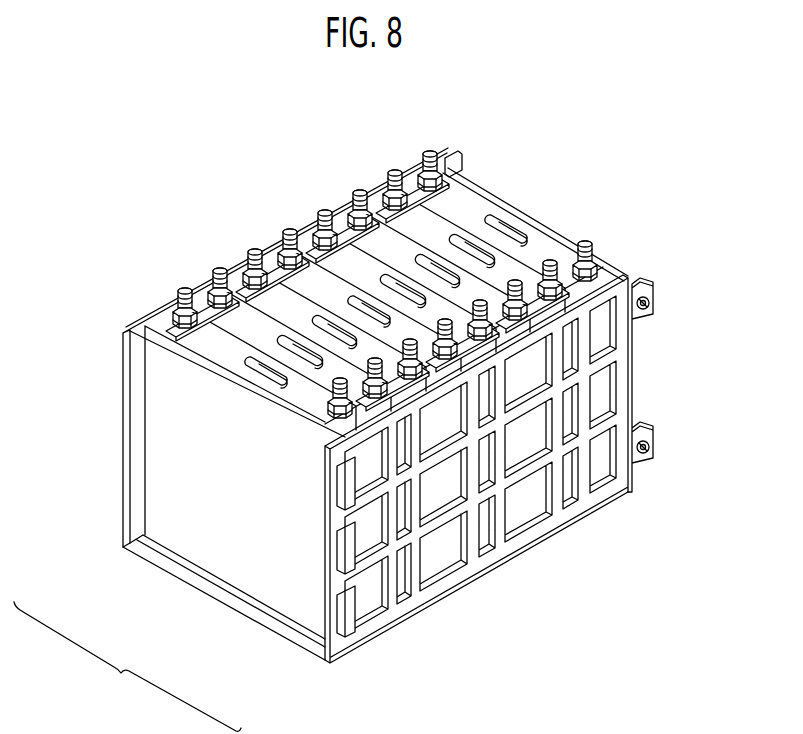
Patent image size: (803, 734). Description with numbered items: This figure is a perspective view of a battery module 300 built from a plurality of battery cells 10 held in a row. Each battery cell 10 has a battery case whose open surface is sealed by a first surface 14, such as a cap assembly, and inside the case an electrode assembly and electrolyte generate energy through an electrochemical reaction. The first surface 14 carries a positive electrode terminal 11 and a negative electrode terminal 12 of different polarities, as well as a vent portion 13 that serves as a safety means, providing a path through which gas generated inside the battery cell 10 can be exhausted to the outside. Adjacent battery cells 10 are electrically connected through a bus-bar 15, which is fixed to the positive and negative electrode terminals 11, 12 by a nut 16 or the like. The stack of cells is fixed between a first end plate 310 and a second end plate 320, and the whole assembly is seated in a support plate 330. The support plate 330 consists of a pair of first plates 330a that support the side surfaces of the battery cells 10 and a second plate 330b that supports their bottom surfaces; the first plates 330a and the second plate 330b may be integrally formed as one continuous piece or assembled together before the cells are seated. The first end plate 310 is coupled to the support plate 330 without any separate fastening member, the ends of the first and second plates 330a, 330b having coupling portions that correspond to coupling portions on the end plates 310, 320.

The battery module 300 is at (353, 413).
The first end plate 310 is at (172, 420).
The second end plate 320 is at (489, 176).
The support plate 330 is at (127, 666).
The first plate 330a is at (118, 488).
The second plate 330b is at (205, 605).
The battery cell 10 is at (538, 502).
The positive electrode terminal 11 is at (427, 152).
The negative electrode terminal 12 is at (583, 243).
The vent portion 13 is at (500, 228).
The first surface 14 is at (552, 247).
The bus-bar 15 is at (208, 306).
The nut 16 is at (250, 258).